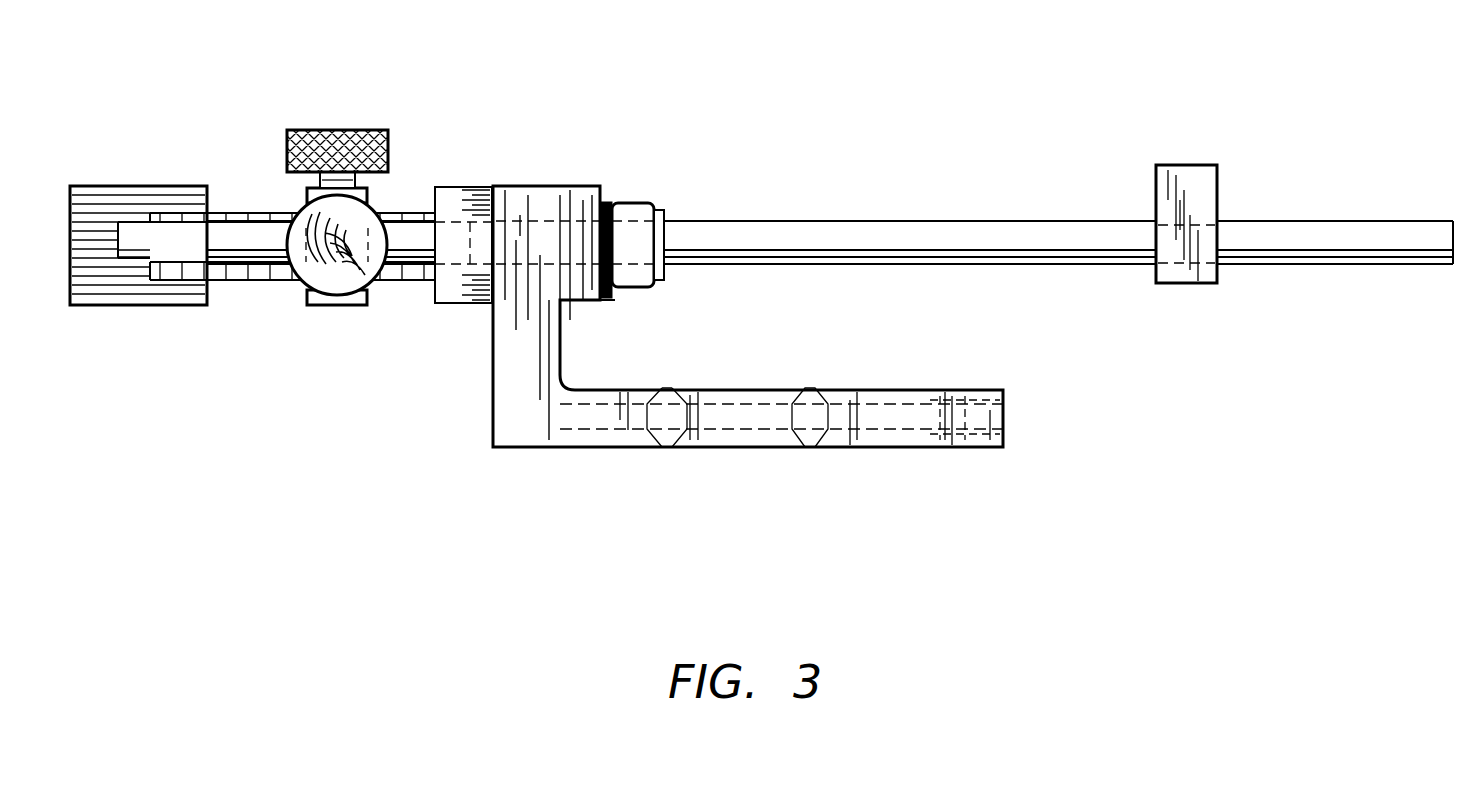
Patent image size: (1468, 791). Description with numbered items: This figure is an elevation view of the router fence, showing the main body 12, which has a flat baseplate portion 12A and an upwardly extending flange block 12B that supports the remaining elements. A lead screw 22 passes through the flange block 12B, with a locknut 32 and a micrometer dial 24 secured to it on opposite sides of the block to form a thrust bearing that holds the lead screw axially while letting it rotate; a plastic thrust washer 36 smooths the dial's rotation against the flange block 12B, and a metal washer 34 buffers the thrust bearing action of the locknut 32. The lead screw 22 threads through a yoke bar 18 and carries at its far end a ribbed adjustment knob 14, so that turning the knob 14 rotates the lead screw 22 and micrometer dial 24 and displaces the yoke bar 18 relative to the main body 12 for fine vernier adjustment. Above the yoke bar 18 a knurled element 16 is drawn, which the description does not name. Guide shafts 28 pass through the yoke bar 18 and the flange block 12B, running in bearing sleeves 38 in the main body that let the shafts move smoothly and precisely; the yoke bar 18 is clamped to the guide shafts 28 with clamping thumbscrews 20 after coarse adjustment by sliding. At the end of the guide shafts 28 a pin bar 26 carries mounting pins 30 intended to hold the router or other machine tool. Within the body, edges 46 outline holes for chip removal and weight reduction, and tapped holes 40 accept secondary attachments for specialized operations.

The main body 12 is at (727, 322).
The baseplate portion 12A is at (847, 437).
The flange block 12B is at (508, 362).
The ribbed adjustment knob 14 is at (133, 186).
The stopcock knob 16 is at (312, 130).
The yoke bar 18 is at (316, 298).
The clamping thumbscrews 20 is at (302, 287).
The lead screw 22 is at (225, 213).
The micrometer dial 24 is at (449, 187).
The pin bar 26 is at (1185, 165).
The guide shafts 28 is at (893, 221).
The mounting pins 30 is at (1350, 221).
The locknut 32 is at (637, 205).
The metal washer 34 is at (610, 300).
The plastic thrust washer 36 is at (490, 308).
The bearing sleeves 38 is at (550, 212).
The tapped holes 40 is at (1005, 418).
The edges 46 is at (668, 392).